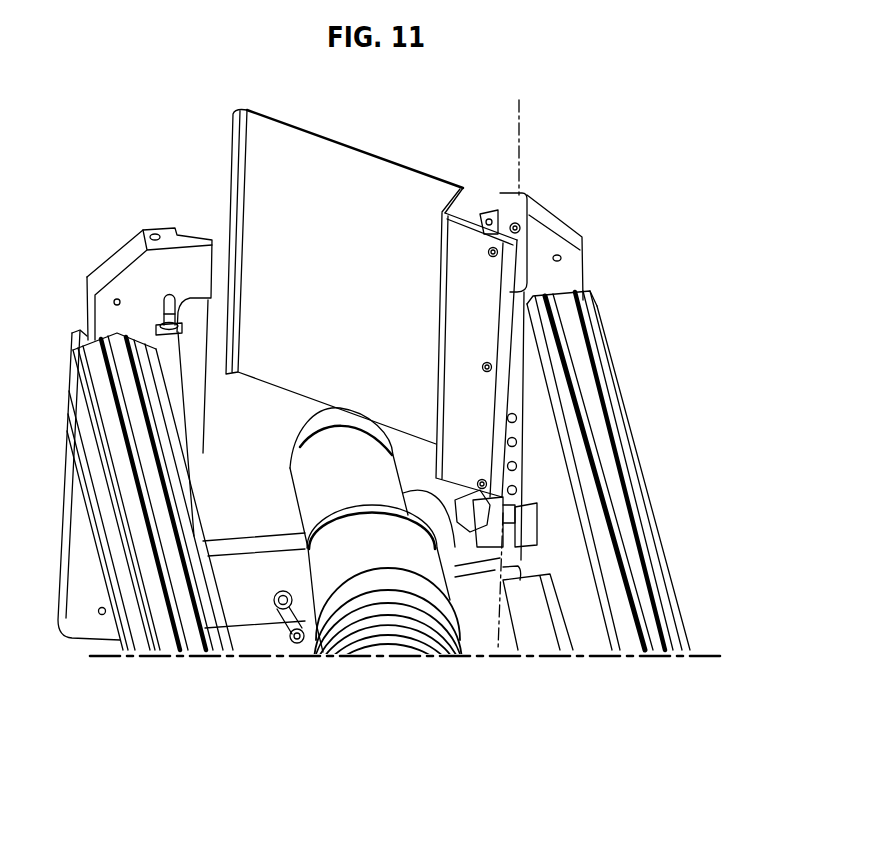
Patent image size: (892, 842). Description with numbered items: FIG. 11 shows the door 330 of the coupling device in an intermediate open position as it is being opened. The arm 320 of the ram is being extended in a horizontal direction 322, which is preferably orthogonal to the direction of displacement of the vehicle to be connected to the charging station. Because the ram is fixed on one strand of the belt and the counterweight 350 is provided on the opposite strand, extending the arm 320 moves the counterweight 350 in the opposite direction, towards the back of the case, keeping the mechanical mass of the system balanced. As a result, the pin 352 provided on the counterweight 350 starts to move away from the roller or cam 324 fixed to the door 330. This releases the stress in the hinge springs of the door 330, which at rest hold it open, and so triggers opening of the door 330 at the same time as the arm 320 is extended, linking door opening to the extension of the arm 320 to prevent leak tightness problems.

The arm 320 is at (323, 457).
The horizontal direction 322 is at (521, 122).
The cam 324 is at (482, 503).
The door 330 is at (320, 241).
The counterweight 350 is at (550, 605).
The pin 352 is at (520, 530).